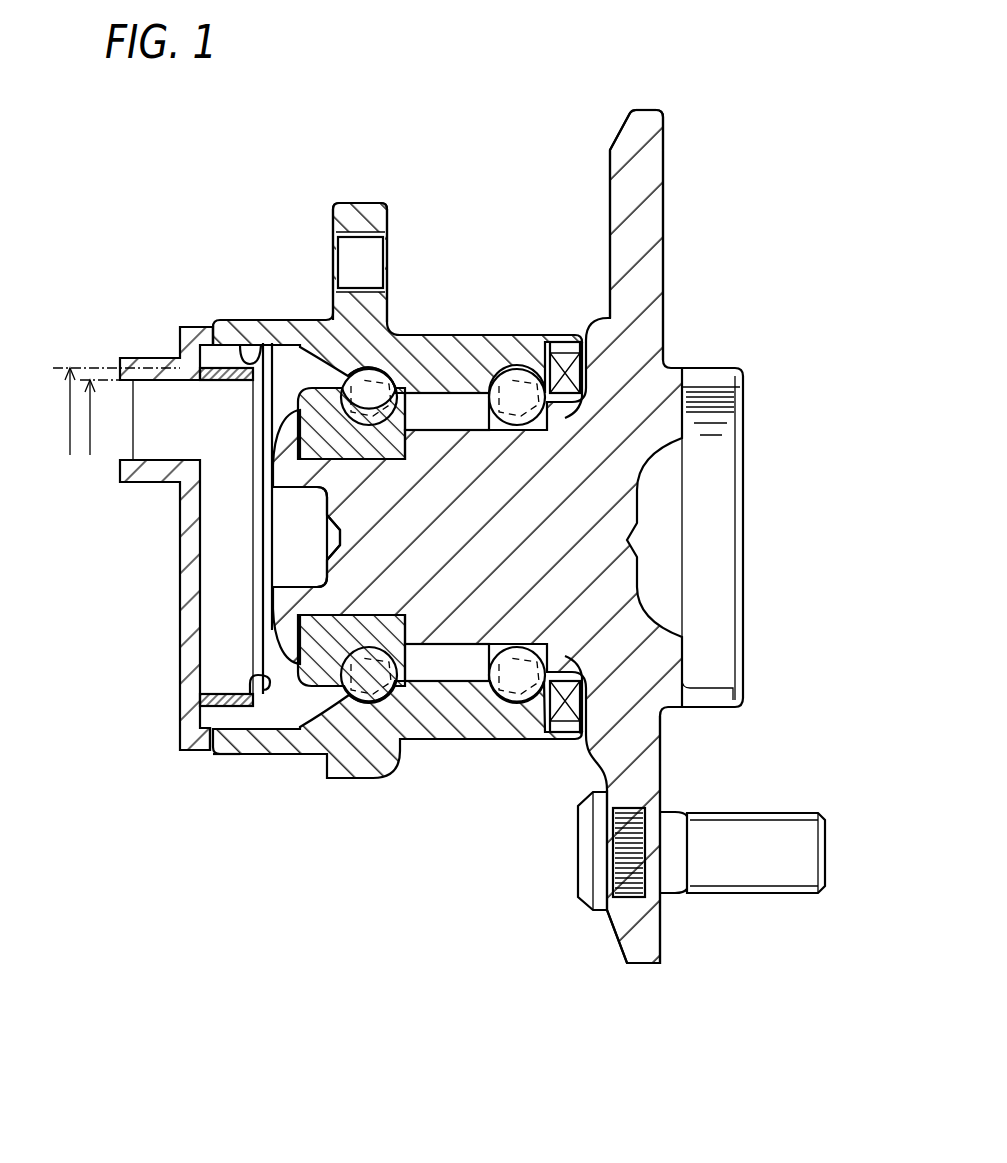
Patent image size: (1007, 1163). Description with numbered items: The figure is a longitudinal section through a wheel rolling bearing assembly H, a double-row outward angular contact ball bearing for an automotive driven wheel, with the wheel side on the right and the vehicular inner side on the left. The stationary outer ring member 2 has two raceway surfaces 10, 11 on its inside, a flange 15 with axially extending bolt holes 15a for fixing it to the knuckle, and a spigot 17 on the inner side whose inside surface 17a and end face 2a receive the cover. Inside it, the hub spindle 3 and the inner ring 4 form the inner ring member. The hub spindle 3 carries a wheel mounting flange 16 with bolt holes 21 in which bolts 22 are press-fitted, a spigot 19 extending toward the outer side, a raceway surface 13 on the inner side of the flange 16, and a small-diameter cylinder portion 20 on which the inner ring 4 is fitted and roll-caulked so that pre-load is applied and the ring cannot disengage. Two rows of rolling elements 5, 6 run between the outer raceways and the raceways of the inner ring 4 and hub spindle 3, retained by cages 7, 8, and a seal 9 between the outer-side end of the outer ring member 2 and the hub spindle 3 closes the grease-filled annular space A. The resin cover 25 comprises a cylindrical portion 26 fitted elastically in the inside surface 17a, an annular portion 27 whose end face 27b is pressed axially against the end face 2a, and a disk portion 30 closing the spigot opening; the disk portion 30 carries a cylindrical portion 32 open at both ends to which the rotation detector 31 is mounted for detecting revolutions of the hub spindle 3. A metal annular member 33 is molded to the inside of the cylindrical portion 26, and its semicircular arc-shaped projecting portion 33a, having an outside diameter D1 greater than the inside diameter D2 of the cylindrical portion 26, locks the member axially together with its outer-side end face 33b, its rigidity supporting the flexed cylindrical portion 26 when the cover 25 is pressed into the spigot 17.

The outer ring member 2 is at (459, 748).
The vehicular-inner-side end face of the outer ring member 2a is at (178, 749).
The hub spindle 3 is at (435, 648).
The inner ring 4 is at (337, 780).
The rolling elements (balls) 5 is at (377, 372).
The rolling elements (balls) 6 is at (513, 372).
The cage 7 is at (417, 391).
The cage 8 is at (470, 393).
The seal 9 is at (586, 360).
The raceway surface 10 is at (291, 320).
The raceway surface 11 is at (515, 421).
The raceway surface 13 is at (503, 690).
The flange 15 is at (378, 216).
The bolt holes 15a is at (378, 256).
The wheel mounting flange 16 is at (640, 118).
The spigot 17 is at (283, 320).
The inside surface of the spigot 17a is at (240, 320).
The spigot 19 is at (740, 366).
The small-diameter cylinder portion 20 is at (352, 597).
The bolt holes 21 is at (625, 900).
The bolts 22 is at (765, 873).
The cover 25 is at (172, 570).
The cylindrical portion 26 is at (255, 754).
The annular portion 27 is at (182, 718).
The vehicular-outer-side end face of the annular portion 27b is at (222, 320).
The disk portion 30 is at (347, 594).
The rotation detector 31 is at (115, 384).
The cylindrical portion 32 is at (150, 477).
The annular member (core) 33 is at (210, 753).
The projecting portion (engaging portion) 33a is at (190, 372).
The vehicular-outer-side end face of the annular member 33b is at (250, 680).
The annular space A is at (461, 668).
The outside diameter of the projecting portion D1 is at (66, 420).
The inside diameter of the cylindrical portion D2 is at (90, 420).
The wheel rolling bearing assembly H is at (684, 149).